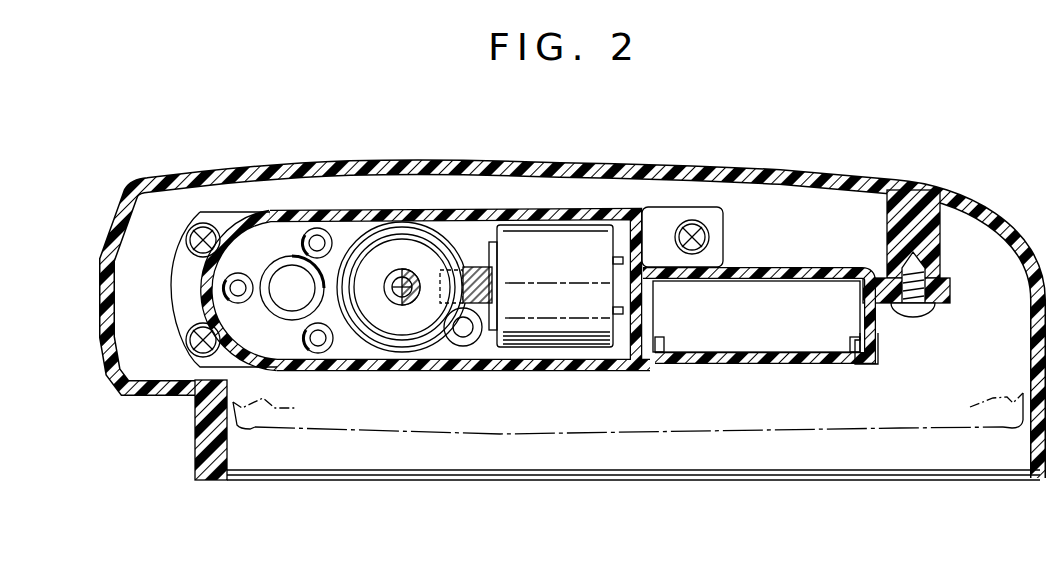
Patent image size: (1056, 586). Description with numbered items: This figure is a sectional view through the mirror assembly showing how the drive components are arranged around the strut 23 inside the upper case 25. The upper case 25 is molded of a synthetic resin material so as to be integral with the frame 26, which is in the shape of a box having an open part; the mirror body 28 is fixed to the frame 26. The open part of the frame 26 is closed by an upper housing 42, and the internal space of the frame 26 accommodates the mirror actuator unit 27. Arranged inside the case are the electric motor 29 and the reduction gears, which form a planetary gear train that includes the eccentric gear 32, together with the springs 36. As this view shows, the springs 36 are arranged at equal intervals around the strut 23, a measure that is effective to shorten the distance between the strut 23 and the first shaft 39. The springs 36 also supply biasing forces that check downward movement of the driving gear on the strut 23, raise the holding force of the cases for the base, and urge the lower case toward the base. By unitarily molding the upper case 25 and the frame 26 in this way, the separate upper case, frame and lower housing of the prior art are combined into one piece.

The strut 23 is at (292, 312).
The upper case 25 is at (570, 200).
The frame 26 is at (823, 270).
The mirror actuator unit 27 is at (787, 338).
The mirror body 28 is at (782, 172).
The electric motor 29 is at (580, 333).
The eccentric gear 32 is at (427, 280).
The springs 36 is at (317, 229).
The first shaft 39 is at (400, 270).
The upper housing 42 is at (840, 364).